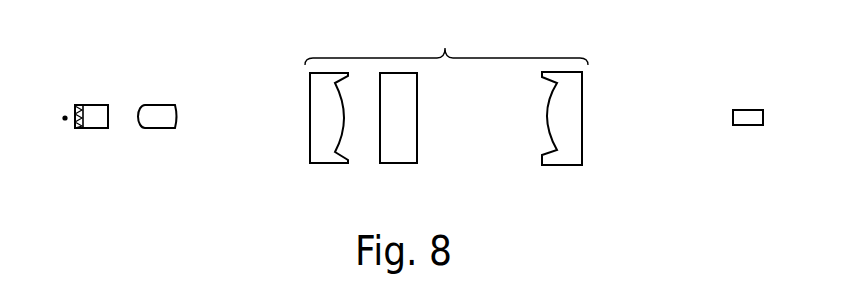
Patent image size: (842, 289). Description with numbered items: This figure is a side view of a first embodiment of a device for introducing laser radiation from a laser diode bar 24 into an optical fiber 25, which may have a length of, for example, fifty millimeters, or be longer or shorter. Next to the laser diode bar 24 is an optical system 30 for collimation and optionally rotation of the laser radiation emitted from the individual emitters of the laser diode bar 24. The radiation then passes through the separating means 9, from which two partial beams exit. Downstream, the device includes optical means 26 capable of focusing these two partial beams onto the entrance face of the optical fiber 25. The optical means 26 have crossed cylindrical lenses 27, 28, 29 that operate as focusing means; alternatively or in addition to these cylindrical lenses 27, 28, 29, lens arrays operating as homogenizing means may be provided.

The separating means 9 is at (155, 104).
The laser diode bar 24 is at (65, 104).
The optical fiber 25 is at (748, 112).
The optical means 26 is at (446, 44).
The cylindrical lens 27 is at (328, 133).
The cylindrical lens 28 is at (402, 133).
The cylindrical lens 29 is at (567, 137).
The optical system 30 is at (95, 123).